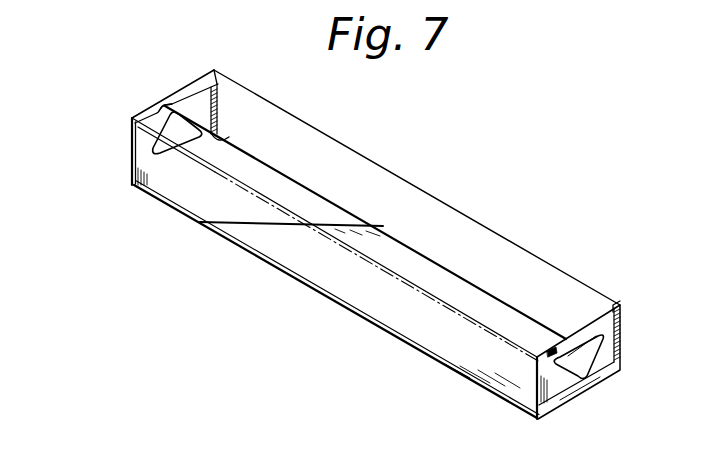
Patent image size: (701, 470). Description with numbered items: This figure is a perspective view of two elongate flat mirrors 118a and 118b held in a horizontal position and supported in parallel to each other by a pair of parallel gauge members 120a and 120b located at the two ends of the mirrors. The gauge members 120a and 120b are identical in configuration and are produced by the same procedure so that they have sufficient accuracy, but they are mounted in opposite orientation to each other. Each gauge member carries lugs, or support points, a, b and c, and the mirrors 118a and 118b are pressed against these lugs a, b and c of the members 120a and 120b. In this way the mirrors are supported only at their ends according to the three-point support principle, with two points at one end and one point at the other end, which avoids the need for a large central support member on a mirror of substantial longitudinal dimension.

The elongate flat mirror 118a is at (413, 177).
The elongate flat mirror 118b is at (322, 270).
The gauge member 120a is at (550, 378).
The gauge member 120b is at (143, 137).
The lug a is at (157, 172).
The lug b is at (228, 138).
The lug c is at (176, 100).